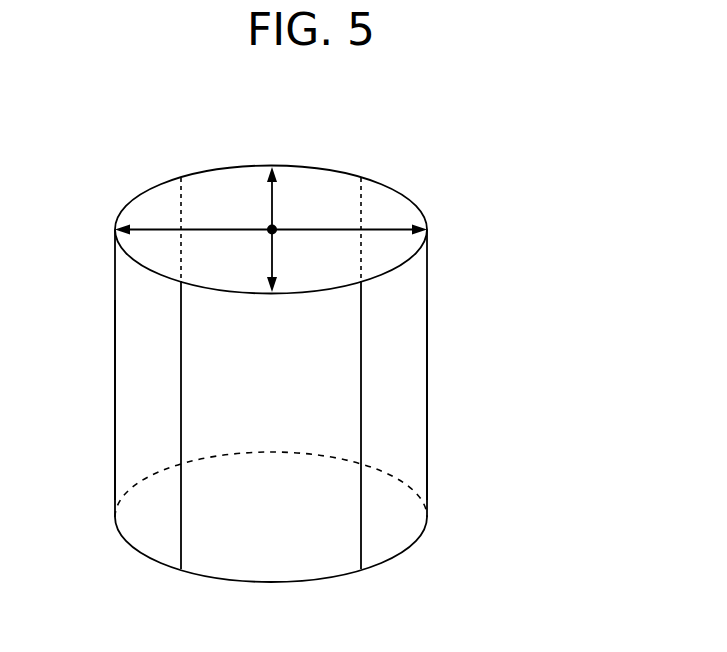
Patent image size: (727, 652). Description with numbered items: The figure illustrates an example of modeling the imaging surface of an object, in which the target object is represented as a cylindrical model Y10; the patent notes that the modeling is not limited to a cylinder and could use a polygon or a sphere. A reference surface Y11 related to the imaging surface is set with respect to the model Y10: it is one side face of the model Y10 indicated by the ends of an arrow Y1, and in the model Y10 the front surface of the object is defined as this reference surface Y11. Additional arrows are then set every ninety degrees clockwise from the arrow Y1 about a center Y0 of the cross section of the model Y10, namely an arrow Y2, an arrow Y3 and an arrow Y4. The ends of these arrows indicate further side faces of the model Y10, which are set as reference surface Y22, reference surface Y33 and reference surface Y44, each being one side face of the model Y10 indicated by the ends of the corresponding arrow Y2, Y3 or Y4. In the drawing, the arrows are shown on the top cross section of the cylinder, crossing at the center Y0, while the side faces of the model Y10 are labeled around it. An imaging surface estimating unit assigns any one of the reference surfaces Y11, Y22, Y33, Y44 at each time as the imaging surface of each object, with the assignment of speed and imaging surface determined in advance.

The model Y10 is at (505, 216).
The reference surface Y44 is at (250, 165).
The reference surface Y22 is at (301, 548).
The reference surface Y33 is at (133, 407).
The reference surface Y11 is at (400, 405).
The center Y0 is at (269, 227).
The arrow Y1 is at (383, 228).
The arrow Y3 is at (160, 228).
The arrow Y4 is at (274, 197).
The arrow Y2 is at (274, 263).